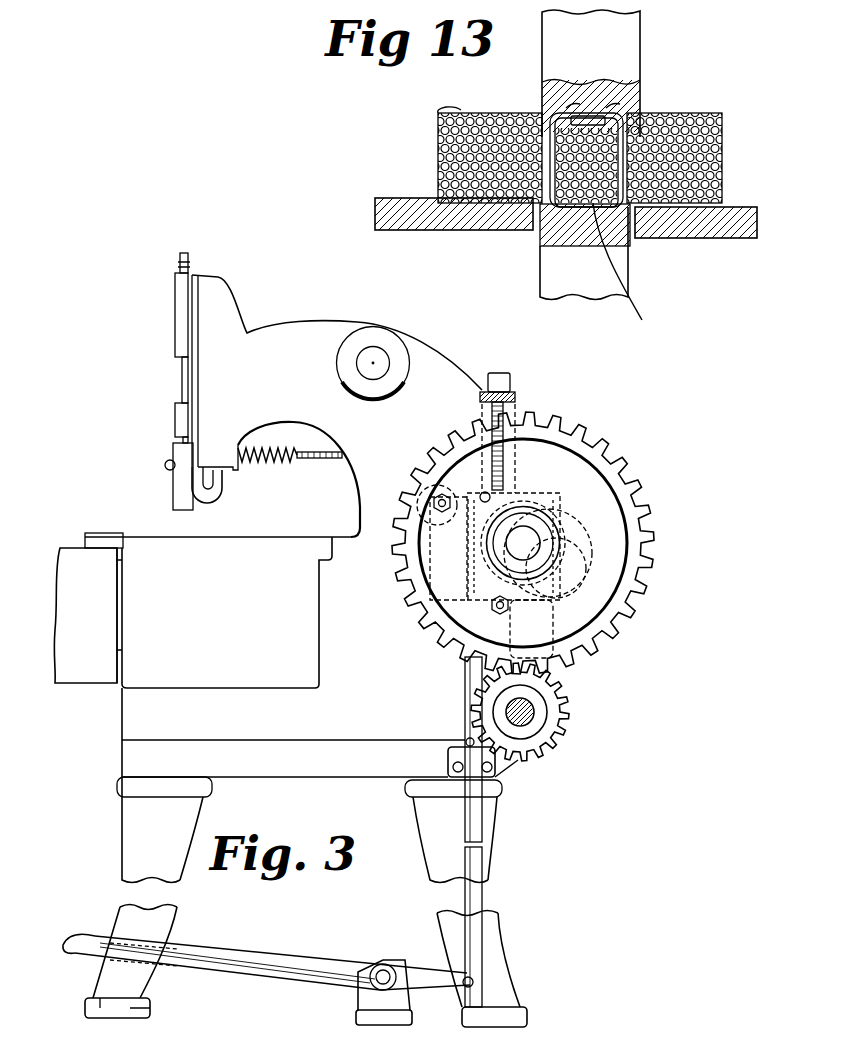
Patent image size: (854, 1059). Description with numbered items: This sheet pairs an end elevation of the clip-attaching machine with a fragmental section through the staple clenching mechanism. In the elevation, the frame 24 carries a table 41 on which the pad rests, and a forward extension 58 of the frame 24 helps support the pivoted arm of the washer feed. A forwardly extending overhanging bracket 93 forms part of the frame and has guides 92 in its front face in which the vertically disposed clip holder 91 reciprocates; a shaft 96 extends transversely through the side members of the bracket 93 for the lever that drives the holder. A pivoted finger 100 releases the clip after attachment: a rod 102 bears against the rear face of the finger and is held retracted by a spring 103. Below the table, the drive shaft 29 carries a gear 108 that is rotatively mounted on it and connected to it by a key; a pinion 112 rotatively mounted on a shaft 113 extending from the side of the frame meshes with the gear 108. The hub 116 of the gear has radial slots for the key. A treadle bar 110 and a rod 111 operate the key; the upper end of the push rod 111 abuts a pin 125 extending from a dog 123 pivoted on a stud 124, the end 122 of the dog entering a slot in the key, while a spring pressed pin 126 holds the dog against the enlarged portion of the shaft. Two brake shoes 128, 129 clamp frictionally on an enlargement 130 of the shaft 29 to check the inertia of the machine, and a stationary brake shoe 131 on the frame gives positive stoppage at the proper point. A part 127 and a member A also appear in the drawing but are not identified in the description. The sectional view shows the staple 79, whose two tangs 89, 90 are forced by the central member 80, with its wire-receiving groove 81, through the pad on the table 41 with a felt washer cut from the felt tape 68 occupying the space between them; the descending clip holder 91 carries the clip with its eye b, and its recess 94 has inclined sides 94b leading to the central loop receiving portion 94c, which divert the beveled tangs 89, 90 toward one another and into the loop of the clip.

In FIG. 3, the frame 24 is at (138, 722).
In FIG. 3, the drive shaft 29 is at (533, 542).
In FIG. 13, the table 41 is at (403, 197).
In FIG. 3, the table 41 is at (212, 537).
In FIG. 3, the forward extension of the frame 58 is at (103, 538).
In FIG. 13, the tape of felt 68 is at (632, 271).
In FIG. 13, the staple 79 is at (508, 202).
In FIG. 13, the central member 80 is at (558, 265).
In FIG. 13, the groove 81 is at (633, 233).
In FIG. 13, the tang 89 is at (548, 128).
In FIG. 13, the tang 90 is at (636, 108).
In FIG. 13, the clip holder 91 is at (636, 49).
In FIG. 3, the clip holder 91 is at (180, 490).
In FIG. 3, the guides 92 is at (195, 367).
In FIG. 3, the overhanging bracket 93 is at (245, 347).
In FIG. 13, the recess 94 is at (555, 115).
In FIG. 13, the sides of the recess 94b is at (642, 115).
In FIG. 13, the central loop receiving portion 94c is at (566, 108).
In FIG. 3, the shaft 96 is at (370, 338).
In FIG. 3, the finger 100 is at (212, 488).
In FIG. 3, the rod 102 is at (315, 463).
In FIG. 3, the spring 103 is at (258, 462).
In FIG. 3, the gear 108 is at (652, 545).
In FIG. 3, the treadle bar 110 is at (95, 935).
In FIG. 3, the rod 111 is at (482, 813).
In FIG. 3, the pinion 112 is at (568, 703).
In FIG. 3, the shaft 113 is at (505, 708).
In FIG. 3, the hub of the gear 116 is at (563, 510).
In FIG. 3, the end of the dog 122 is at (550, 493).
In FIG. 3, the dog 123 is at (440, 488).
In FIG. 3, the stud 124 is at (425, 509).
In FIG. 3, the pin 125 is at (484, 495).
In FIG. 3, the spring pressed pin 126 is at (515, 440).
In FIG. 3, the adjusting screw 127 is at (512, 392).
In FIG. 3, the brake shoe 128 is at (470, 545).
In FIG. 3, the brake shoe 129 is at (573, 570).
In FIG. 3, the enlargement 130 is at (578, 527).
In FIG. 3, the stationary brake shoe 131 is at (548, 632).
In FIG. 3, the work piece A is at (102, 535).
In FIG. 13, the eye of the clip b is at (594, 49).